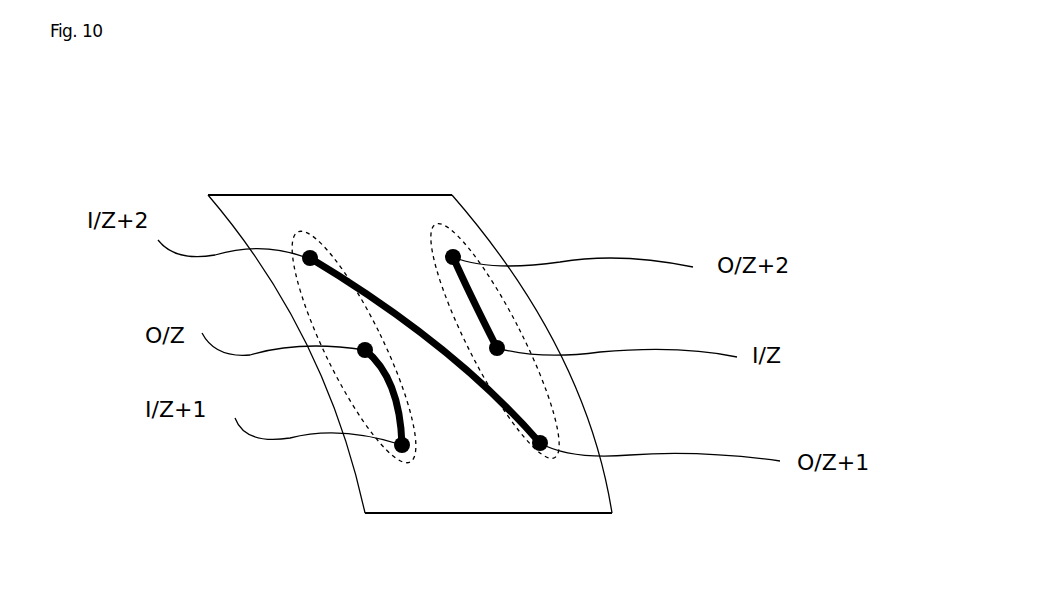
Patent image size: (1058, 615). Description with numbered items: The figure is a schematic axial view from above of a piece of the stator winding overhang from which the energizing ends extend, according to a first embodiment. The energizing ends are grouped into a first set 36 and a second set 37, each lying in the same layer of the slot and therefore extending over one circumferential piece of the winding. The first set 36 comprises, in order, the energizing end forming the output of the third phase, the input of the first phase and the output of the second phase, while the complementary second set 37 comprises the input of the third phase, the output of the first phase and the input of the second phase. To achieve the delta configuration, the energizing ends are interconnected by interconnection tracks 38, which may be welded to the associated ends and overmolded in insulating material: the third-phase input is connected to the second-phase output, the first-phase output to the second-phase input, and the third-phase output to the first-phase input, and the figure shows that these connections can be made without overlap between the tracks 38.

The first set 36 is at (455, 230).
The second set 37 is at (297, 237).
The interconnection track 38 is at (383, 298).